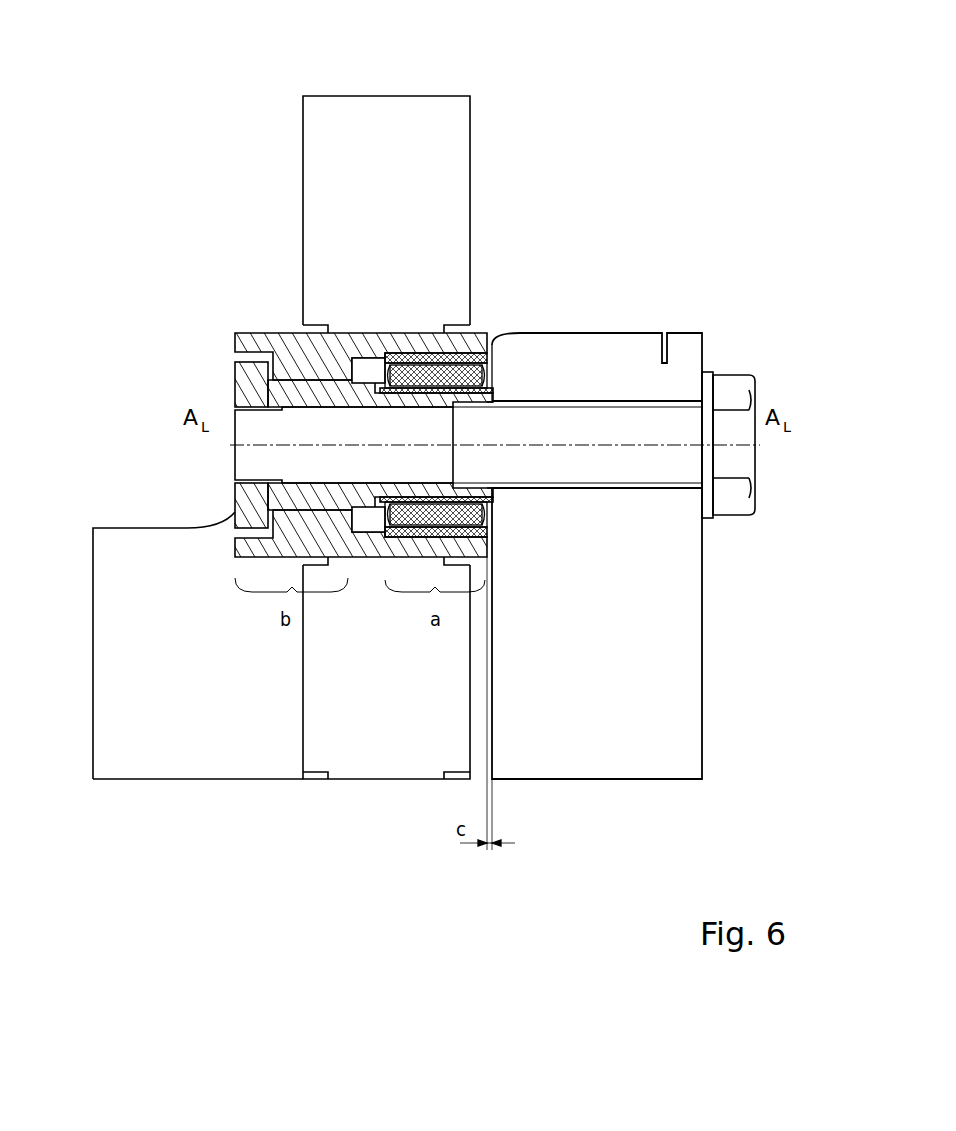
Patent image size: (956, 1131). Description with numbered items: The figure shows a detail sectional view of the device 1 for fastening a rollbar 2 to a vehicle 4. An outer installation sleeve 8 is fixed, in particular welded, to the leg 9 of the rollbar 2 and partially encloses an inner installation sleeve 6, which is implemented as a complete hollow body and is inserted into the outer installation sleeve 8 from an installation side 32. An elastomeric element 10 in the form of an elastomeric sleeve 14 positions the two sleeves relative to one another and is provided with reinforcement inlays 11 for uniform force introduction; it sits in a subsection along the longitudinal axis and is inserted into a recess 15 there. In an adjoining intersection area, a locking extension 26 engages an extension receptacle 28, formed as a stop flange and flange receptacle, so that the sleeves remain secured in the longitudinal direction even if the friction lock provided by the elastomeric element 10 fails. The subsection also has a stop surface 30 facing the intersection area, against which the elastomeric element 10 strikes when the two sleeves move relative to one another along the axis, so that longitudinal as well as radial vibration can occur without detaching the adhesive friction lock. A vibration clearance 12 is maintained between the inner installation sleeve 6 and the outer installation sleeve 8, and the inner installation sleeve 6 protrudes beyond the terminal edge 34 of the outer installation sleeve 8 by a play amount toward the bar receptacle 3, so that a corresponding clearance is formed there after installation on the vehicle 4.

The device 1 is at (150, 237).
The rollbar 2 is at (406, 392).
The leg 9 is at (317, 149).
The bar receptacle 3 is at (503, 392).
The vehicle 4 is at (735, 298).
The inner installation sleeve 6 is at (252, 507).
The outer installation sleeve 8 is at (247, 343).
The elastomeric element 10 is at (494, 352).
The elastomeric sleeve 14 is at (494, 352).
The reinforcement inlays 11 is at (458, 377).
The vibration clearance 12 is at (303, 372).
The recess 15 is at (530, 363).
The locking extension 26 is at (344, 441).
The extension receptacle 28 is at (344, 441).
The stop surface 30 is at (317, 375).
The installation side 32 is at (232, 378).
The terminal edge 34 is at (490, 548).